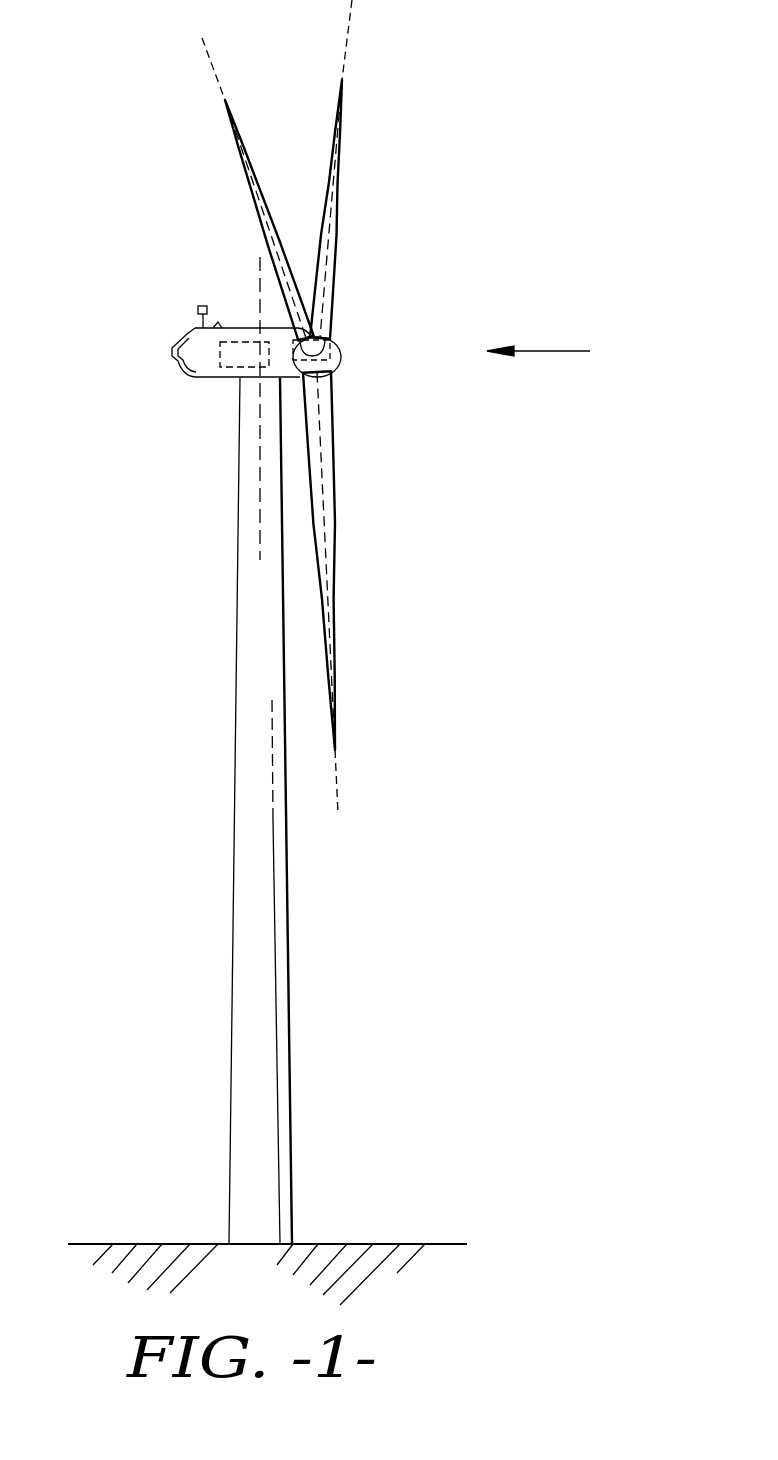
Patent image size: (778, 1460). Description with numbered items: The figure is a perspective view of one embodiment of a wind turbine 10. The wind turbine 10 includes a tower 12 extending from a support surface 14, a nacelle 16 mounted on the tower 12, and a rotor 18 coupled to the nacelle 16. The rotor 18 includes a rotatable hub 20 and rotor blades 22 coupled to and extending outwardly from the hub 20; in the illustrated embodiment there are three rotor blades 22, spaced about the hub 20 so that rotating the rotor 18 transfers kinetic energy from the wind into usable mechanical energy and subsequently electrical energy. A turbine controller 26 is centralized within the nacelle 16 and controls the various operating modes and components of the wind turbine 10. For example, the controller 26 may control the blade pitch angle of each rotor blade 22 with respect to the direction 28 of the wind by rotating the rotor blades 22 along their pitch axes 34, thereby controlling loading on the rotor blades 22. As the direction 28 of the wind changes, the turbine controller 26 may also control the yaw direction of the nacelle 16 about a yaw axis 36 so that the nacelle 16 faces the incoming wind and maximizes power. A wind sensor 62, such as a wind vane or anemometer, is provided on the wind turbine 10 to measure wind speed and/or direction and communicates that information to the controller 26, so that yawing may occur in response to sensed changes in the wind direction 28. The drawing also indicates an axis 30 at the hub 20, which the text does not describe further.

The wind turbine 10 is at (470, 158).
The tower 12 is at (245, 930).
The support surface 14 is at (153, 1244).
The nacelle 16 is at (215, 378).
The rotor 18 is at (345, 330).
The rotatable hub 20 is at (333, 360).
The rotor blade 22 is at (267, 197).
The turbine controller 26 is at (247, 322).
The direction of the wind 28 is at (547, 351).
The axis of rotation 30 is at (340, 338).
The pitch axis 34 is at (213, 72).
The yaw axis 36 is at (260, 470).
The wind sensor 62 is at (197, 310).